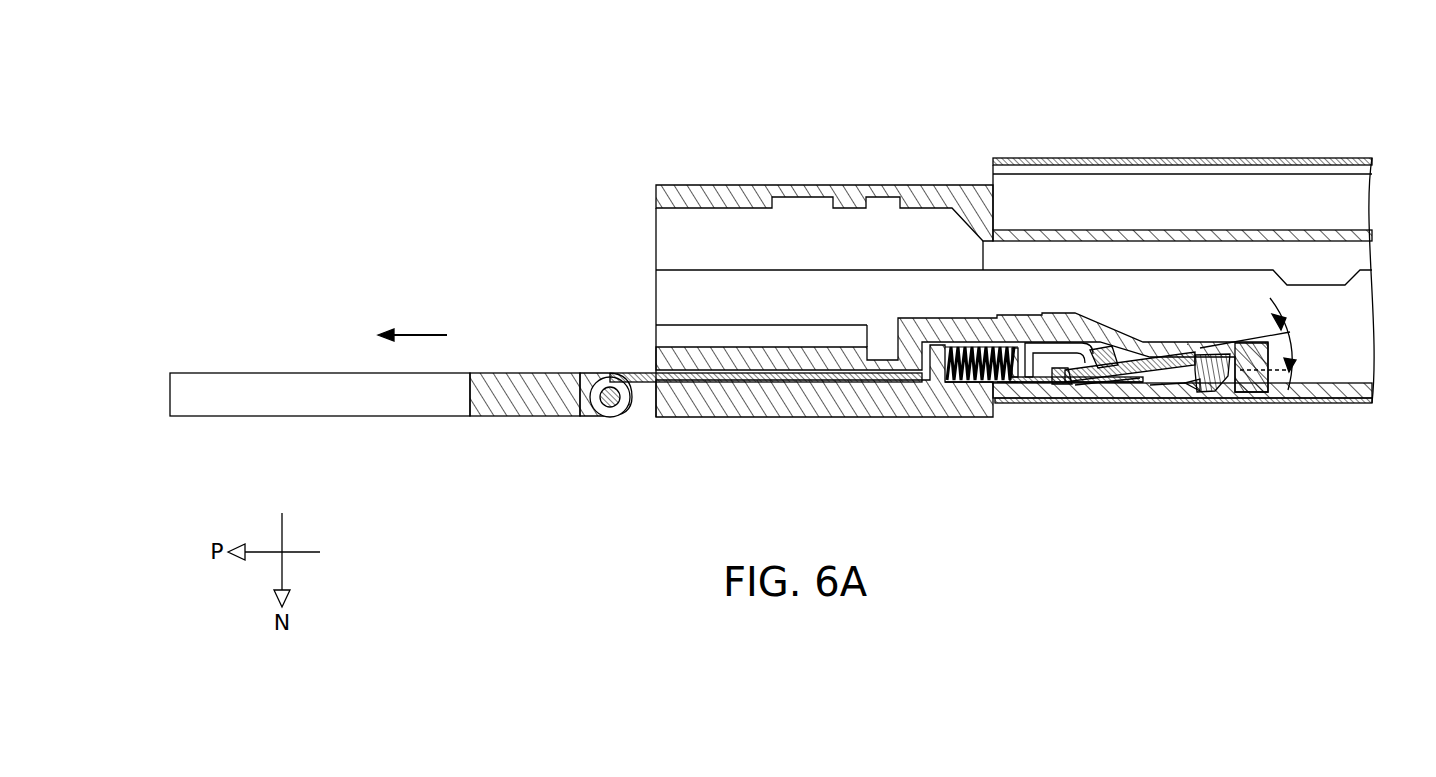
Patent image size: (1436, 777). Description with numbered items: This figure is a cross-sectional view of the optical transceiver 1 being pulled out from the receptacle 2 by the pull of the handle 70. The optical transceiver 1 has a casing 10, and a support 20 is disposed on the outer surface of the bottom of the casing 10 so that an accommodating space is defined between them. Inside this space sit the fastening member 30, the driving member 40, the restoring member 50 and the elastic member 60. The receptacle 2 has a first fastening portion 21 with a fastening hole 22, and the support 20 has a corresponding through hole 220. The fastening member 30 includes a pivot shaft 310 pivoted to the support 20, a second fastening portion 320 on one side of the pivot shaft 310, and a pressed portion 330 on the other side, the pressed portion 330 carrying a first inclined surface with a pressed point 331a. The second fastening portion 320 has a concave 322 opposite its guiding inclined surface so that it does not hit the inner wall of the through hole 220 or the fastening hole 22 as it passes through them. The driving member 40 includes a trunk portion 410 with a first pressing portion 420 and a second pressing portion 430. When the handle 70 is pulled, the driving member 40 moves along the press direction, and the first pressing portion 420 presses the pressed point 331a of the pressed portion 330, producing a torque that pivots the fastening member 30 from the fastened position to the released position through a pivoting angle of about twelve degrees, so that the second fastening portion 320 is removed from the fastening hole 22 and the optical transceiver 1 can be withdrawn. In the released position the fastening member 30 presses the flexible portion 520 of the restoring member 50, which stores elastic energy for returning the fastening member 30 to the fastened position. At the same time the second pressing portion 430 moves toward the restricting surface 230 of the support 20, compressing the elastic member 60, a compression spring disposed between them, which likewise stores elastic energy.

The optical transceiver 1 is at (711, 95).
The receptacle 2 is at (1310, 154).
The casing 10 is at (650, 221).
The support 20 is at (858, 400).
The first fastening portion 21 is at (1348, 408).
The fastening hole 22 is at (1225, 400).
The through hole 220 is at (1240, 392).
The restricting surface 230 is at (957, 383).
The fastening member 30 is at (1207, 350).
The pivot shaft 310 is at (1162, 352).
The second fastening portion 320 is at (1203, 390).
The concave 322 is at (1167, 386).
The pressed portion 330 is at (1067, 371).
The pressed point 331a is at (1096, 376).
The driving member 40 is at (640, 367).
The trunk portion 410 is at (733, 383).
The first pressing portion 420 is at (1108, 351).
The second pressing portion 430 is at (1023, 349).
The restoring member 50 is at (1024, 401).
The flexible portion 520 is at (1060, 384).
The elastic member 60 is at (960, 346).
The handle 70 is at (287, 388).